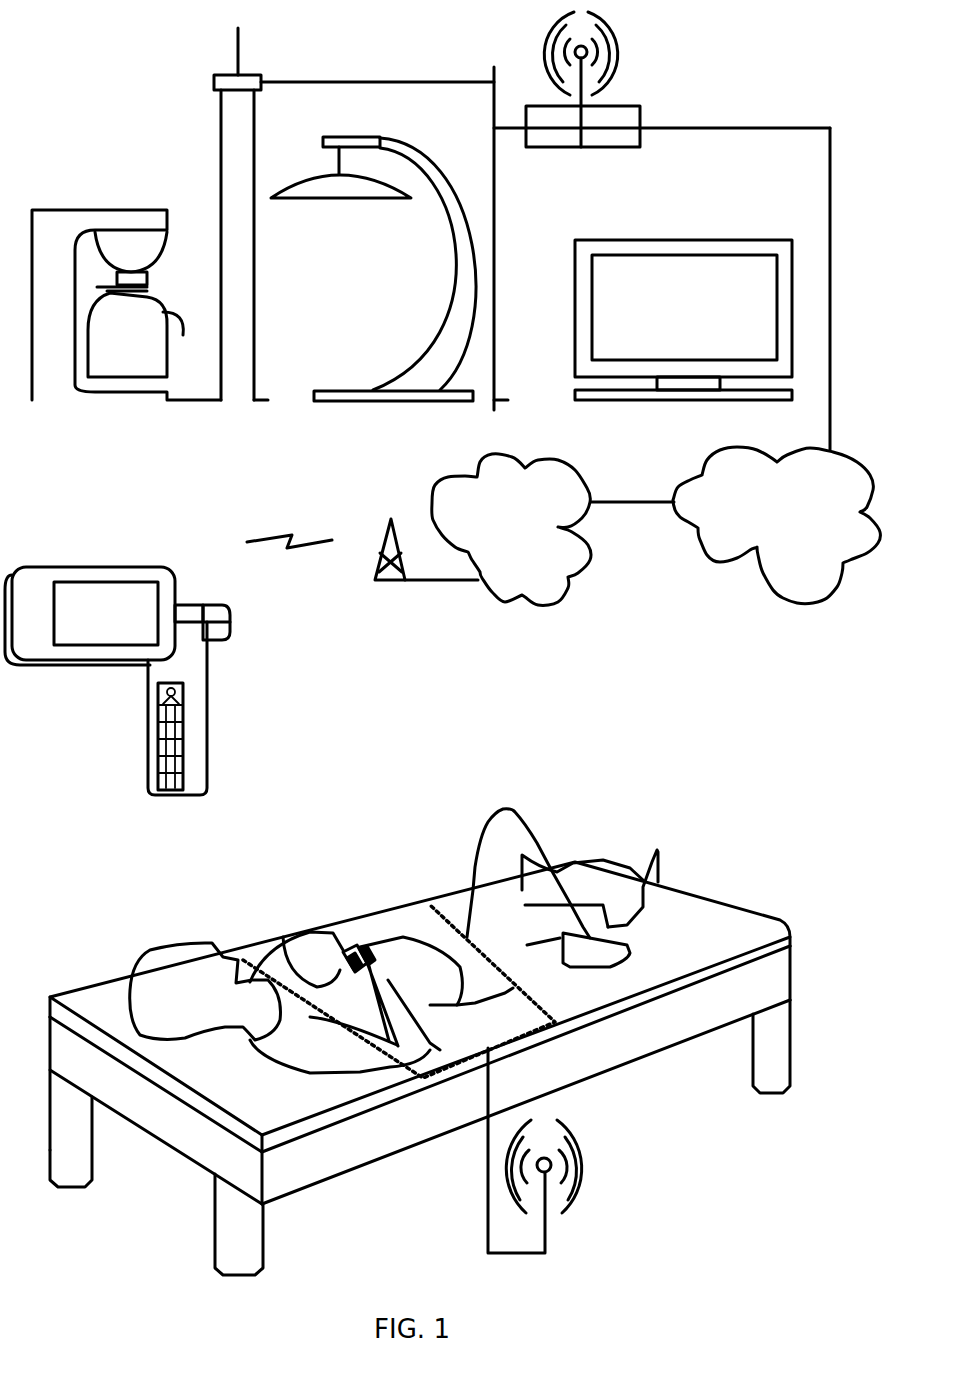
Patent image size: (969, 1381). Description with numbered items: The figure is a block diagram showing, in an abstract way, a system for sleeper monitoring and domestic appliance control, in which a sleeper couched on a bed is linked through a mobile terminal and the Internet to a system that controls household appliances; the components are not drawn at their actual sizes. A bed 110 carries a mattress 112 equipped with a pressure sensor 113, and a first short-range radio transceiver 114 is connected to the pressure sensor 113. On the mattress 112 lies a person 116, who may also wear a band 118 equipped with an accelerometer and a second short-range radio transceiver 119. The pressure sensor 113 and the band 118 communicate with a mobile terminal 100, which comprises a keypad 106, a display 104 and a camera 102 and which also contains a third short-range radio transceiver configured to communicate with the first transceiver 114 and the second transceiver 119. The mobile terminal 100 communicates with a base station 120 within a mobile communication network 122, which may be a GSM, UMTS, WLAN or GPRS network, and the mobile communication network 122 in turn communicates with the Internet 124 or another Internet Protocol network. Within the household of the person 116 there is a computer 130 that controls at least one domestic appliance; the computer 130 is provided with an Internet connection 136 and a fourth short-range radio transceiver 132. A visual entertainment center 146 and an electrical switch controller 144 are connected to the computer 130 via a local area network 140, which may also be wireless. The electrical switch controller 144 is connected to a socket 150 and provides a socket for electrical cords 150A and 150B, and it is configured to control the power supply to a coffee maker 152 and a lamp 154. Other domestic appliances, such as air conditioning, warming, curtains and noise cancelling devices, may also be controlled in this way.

The mobile terminal 100 is at (210, 713).
The camera 102 is at (230, 622).
The display 104 is at (50, 662).
The keypad 106 is at (180, 742).
The bed 110 is at (633, 1063).
The mattress 112 is at (650, 993).
The pressure sensor 113 is at (553, 1035).
The first short-range radio transceiver 114 is at (487, 1237).
The person 116 is at (157, 947).
The band 118 is at (401, 925).
The second short-range radio transceiver 119 is at (290, 985).
The base station 120 is at (375, 582).
The mobile communication network 122 is at (545, 605).
The Internet 124 is at (807, 603).
The computer 130 is at (580, 147).
The fourth short-range radio transceiver 132 is at (585, 90).
The Internet connection 136 is at (790, 128).
The local area network 140 is at (494, 152).
The electrical switch controller 144 is at (213, 80).
The visual entertainment center 146 is at (777, 240).
The socket 150 is at (235, 35).
The electrical cord 150A is at (245, 283).
The electrical cord 150B is at (255, 203).
The coffee maker 152 is at (138, 212).
The lamp 154 is at (417, 353).